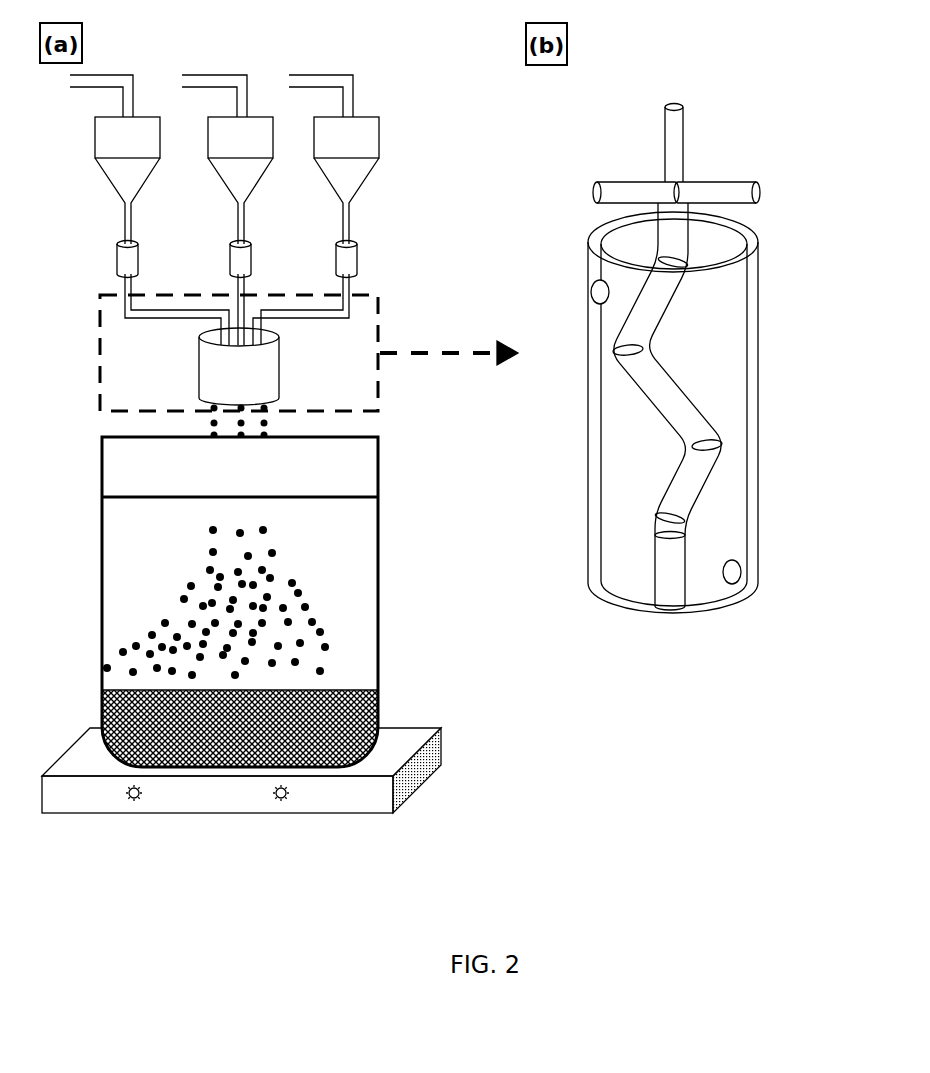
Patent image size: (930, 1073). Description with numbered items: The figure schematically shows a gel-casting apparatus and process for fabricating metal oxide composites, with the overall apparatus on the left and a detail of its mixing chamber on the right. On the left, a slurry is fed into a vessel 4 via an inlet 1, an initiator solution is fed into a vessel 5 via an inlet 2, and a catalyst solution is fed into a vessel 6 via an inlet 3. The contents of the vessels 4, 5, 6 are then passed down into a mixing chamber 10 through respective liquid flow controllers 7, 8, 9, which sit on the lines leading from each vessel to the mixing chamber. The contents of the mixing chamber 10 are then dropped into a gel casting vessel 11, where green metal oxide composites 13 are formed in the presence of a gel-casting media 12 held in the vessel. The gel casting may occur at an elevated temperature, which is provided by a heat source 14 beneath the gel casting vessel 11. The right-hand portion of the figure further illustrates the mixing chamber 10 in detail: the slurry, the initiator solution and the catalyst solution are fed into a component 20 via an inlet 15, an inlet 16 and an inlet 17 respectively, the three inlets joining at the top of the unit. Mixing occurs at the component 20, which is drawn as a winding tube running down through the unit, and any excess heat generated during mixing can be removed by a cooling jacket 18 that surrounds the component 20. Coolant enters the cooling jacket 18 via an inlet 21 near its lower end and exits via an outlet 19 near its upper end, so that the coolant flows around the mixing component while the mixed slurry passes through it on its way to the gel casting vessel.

The inlet 1 is at (68, 81).
The inlet 2 is at (181, 81).
The inlet 3 is at (288, 81).
The vessel 4 is at (93, 139).
The vessel 5 is at (206, 139).
The vessel 6 is at (312, 139).
The liquid flow controller 7 is at (118, 243).
The liquid flow controller 8 is at (231, 243).
The liquid flow controller 9 is at (337, 243).
The mixing chamber 10 is at (198, 372).
The gel casting vessel 11 is at (380, 562).
The gel-casting media 12 is at (356, 640).
The green metal oxide composites 13 is at (346, 667).
The heat source 14 is at (398, 737).
The inlet 15 is at (664, 108).
The inlet 16 is at (593, 193).
The inlet 17 is at (759, 193).
The cooling jacket 18 is at (598, 243).
The outlet 19 is at (596, 293).
The component 20 is at (653, 400).
The inlet 21 is at (736, 572).